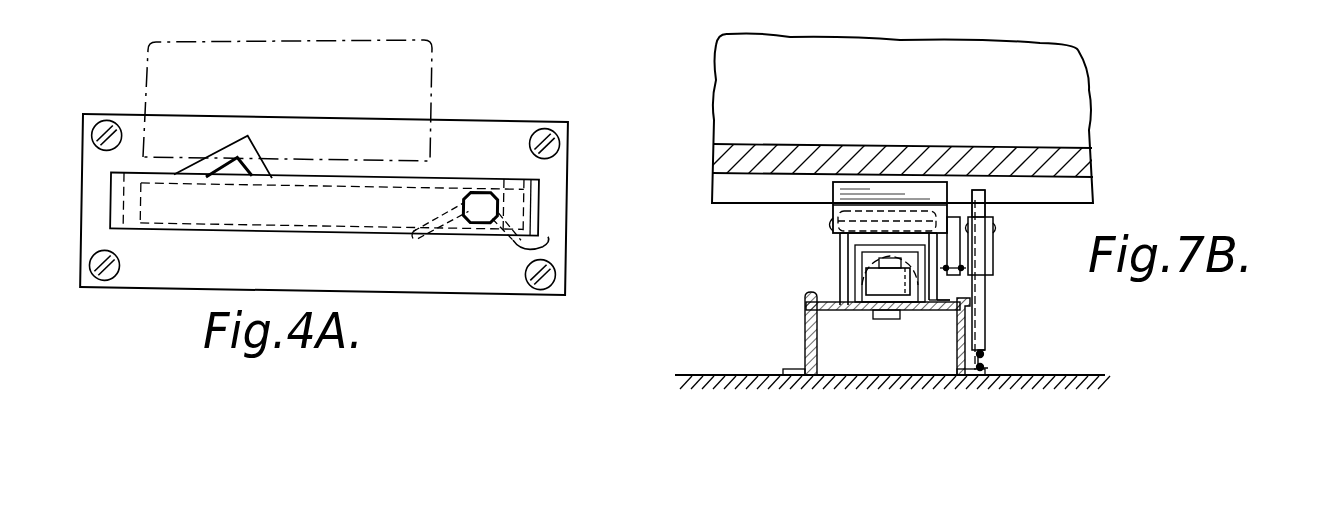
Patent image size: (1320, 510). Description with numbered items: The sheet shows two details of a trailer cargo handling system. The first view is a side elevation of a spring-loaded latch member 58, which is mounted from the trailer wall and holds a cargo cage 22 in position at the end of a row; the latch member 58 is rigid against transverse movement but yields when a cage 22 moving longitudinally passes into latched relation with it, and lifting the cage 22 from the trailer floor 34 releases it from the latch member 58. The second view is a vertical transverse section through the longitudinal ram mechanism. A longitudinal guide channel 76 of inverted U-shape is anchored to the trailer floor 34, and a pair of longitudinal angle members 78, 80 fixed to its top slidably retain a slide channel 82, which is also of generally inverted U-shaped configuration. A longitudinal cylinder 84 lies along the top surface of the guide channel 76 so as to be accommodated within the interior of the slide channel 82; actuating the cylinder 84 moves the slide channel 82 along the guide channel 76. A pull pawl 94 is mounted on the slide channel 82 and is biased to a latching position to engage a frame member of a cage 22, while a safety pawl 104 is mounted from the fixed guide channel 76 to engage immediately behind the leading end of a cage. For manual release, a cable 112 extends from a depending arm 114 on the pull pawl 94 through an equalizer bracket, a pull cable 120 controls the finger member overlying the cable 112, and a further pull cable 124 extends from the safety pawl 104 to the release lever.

In FIG. 4A, the cargo cage 22 is at (433, 84).
In FIG. 7B, the cargo cage 22 is at (1070, 95).
In FIG. 4A, the spring-loaded latch member 58 is at (260, 144).
In FIG. 7B, the trailer floor 34 is at (1058, 378).
In FIG. 7B, the pull pawl 94 is at (836, 193).
In FIG. 7B, the slide channel 82 is at (840, 247).
In FIG. 7B, the longitudinal cylinder 84 is at (862, 270).
In FIG. 7B, the longitudinal angle member 78 is at (806, 303).
In FIG. 7B, the longitudinal guide channel 76 is at (805, 345).
In FIG. 7B, the longitudinal angle member 80 is at (987, 296).
In FIG. 7B, the safety pawl 104 is at (985, 205).
In FIG. 7B, the depending arm 114 is at (957, 250).
In FIG. 7B, the cable 112 is at (973, 270).
In FIG. 7B, the pull cable 120 is at (985, 354).
In FIG. 7B, the pull cable 124 is at (988, 367).